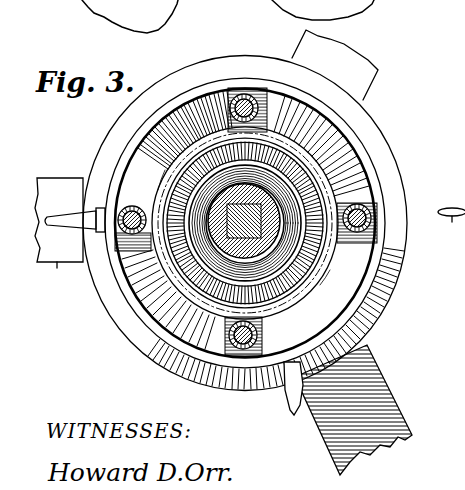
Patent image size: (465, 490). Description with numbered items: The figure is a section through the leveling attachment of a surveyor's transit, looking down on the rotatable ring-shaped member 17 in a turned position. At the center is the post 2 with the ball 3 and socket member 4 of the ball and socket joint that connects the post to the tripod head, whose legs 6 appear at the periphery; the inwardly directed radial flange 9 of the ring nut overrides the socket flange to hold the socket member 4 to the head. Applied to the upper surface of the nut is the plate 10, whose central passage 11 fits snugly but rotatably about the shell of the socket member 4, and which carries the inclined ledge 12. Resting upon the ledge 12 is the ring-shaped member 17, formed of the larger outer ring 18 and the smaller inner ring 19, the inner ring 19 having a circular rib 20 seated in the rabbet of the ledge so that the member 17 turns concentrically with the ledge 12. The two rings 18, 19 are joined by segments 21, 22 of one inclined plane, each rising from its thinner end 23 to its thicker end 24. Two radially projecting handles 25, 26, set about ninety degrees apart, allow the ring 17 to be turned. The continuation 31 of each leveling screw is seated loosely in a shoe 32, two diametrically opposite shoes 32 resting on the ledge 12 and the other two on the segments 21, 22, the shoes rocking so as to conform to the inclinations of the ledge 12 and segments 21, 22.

The post 2 is at (268, 196).
The ball 3 is at (212, 201).
The socket member 4 is at (296, 217).
The tripod legs 6 is at (56, 263).
The inwardly directed radial flange 9 is at (245, 223).
The plate 10 is at (392, 272).
The central passage 11 is at (209, 277).
The inclined ledge 12 is at (245, 223).
The ring-shaped member 17 is at (375, 151).
The outer ring 18 is at (381, 169).
The inner ring 19 is at (321, 146).
The circular rib 20 is at (167, 161).
The inclined plane segment 21 is at (153, 143).
The inclined plane segment 22 is at (327, 291).
The segment end 23 is at (235, 93).
The segment end 24 is at (232, 400).
The radially projecting handle 25 is at (62, 217).
The radially projecting handle 26 is at (293, 410).
The continuation 31 is at (252, 97).
The shoe 32 is at (272, 94).